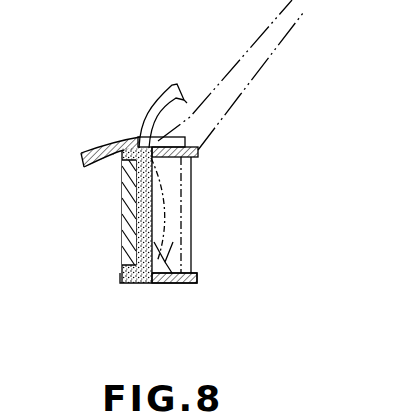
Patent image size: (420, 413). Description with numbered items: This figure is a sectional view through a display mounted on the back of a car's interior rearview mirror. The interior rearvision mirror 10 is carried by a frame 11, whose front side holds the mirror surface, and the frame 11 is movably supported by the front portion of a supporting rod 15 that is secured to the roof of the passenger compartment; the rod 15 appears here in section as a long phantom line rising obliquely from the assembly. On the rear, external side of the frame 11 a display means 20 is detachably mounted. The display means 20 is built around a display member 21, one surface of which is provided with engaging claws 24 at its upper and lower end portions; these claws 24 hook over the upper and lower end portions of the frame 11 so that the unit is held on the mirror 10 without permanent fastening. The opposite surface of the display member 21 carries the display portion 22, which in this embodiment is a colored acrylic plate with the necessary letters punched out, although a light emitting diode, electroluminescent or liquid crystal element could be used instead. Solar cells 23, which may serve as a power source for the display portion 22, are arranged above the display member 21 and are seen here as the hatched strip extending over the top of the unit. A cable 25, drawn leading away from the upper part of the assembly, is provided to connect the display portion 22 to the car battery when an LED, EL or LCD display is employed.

The interior rearvision mirror 10 is at (201, 231).
The frame 11 is at (164, 283).
The supporting rod 15 is at (247, 80).
The display means 20 is at (97, 233).
The display member 21 is at (119, 277).
The display portion 22 is at (120, 195).
The solar cells 23 is at (94, 149).
The engaging claws 24 is at (198, 153).
The cable 25 is at (146, 112).